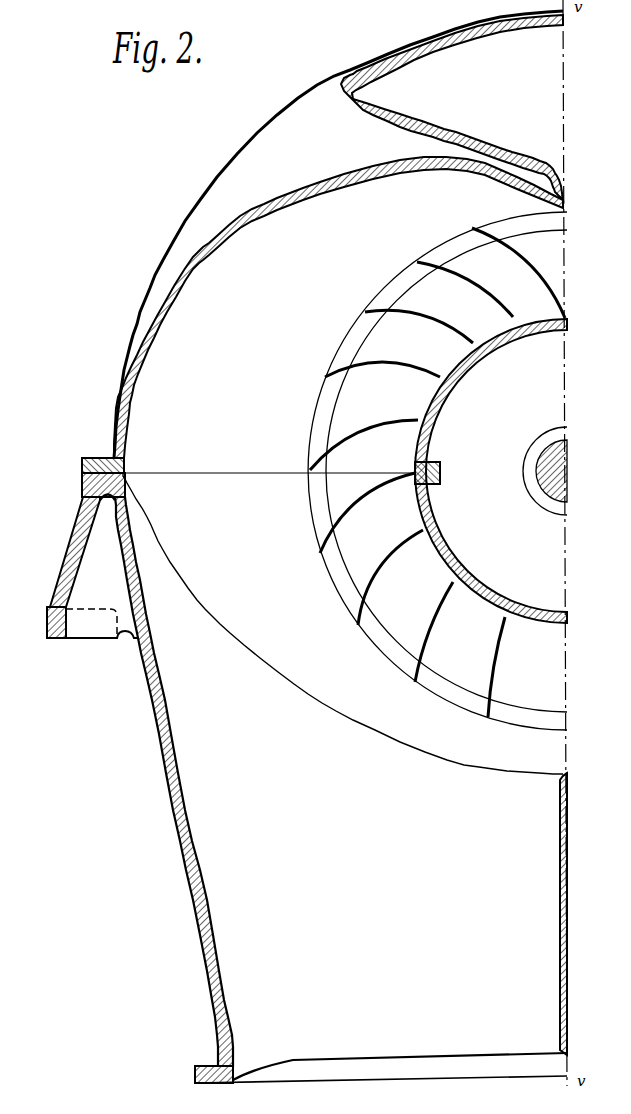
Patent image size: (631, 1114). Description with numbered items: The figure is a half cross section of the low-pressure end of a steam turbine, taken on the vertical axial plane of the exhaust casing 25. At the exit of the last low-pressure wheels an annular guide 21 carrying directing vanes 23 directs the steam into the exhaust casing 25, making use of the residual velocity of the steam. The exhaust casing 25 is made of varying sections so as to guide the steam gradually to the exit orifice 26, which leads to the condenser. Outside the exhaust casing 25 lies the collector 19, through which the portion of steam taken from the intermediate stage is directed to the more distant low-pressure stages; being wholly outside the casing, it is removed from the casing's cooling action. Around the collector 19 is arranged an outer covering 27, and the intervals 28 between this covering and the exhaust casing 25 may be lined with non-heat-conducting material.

The collector 19 is at (453, 127).
The annular guide 21 is at (443, 396).
The directing vanes 23 is at (445, 323).
The exhaust casing 25 is at (249, 226).
The exit orifice 26 is at (405, 928).
The outer covering 27 is at (308, 88).
The intervals 28 is at (305, 145).